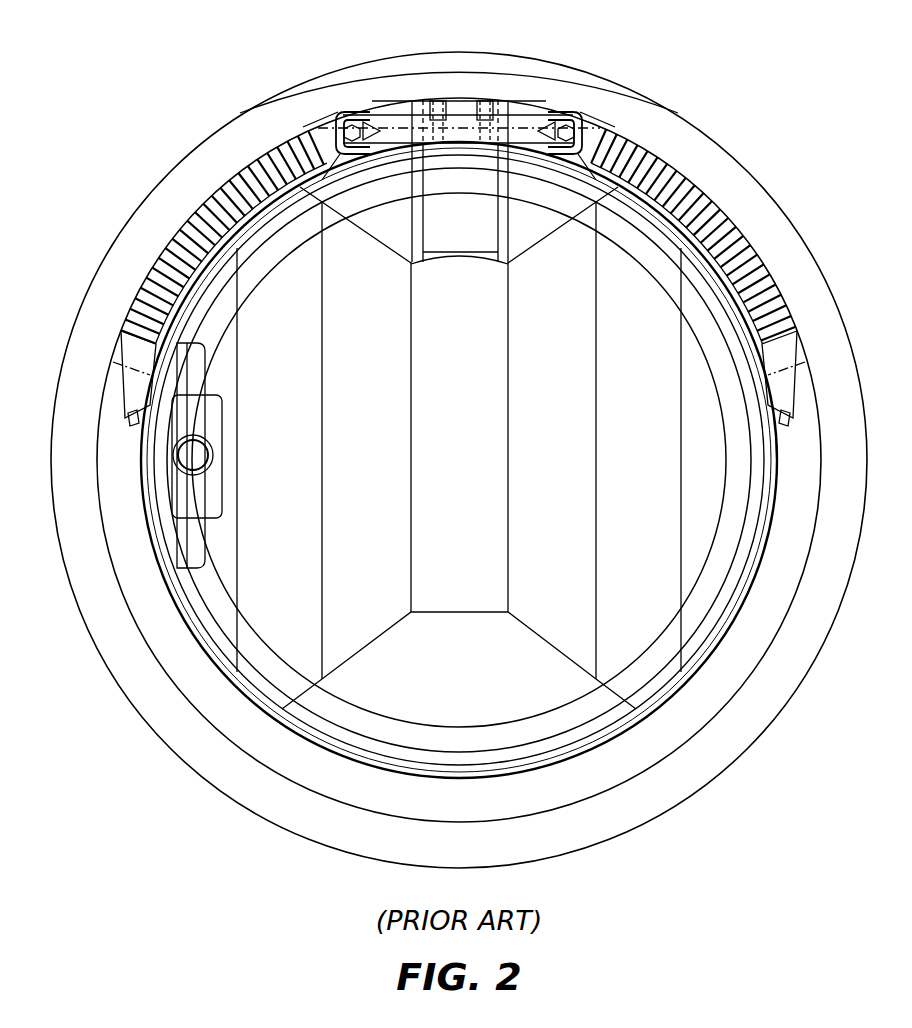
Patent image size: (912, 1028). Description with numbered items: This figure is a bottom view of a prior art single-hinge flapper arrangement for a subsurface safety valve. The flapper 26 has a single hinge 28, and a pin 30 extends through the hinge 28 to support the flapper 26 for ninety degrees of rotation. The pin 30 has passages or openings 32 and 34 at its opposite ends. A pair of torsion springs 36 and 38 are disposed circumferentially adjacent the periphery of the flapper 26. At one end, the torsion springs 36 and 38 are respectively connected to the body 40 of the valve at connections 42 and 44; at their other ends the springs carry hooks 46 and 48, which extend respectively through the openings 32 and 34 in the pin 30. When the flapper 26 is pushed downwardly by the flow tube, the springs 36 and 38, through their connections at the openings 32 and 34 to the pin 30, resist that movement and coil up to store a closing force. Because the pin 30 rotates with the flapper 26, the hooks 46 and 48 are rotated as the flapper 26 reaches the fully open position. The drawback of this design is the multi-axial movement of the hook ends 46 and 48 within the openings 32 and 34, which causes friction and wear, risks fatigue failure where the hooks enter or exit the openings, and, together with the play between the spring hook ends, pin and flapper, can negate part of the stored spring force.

The flapper 26 is at (560, 446).
The hinge 28 is at (500, 101).
The pin 30 is at (397, 113).
The opening 32 is at (368, 120).
The opening 34 is at (553, 120).
The torsion spring 36 is at (197, 215).
The torsion spring 38 is at (722, 215).
The body 40 is at (770, 698).
The connection 42 is at (132, 415).
The connection 44 is at (786, 415).
The hook 46 is at (342, 118).
The hook 48 is at (576, 118).